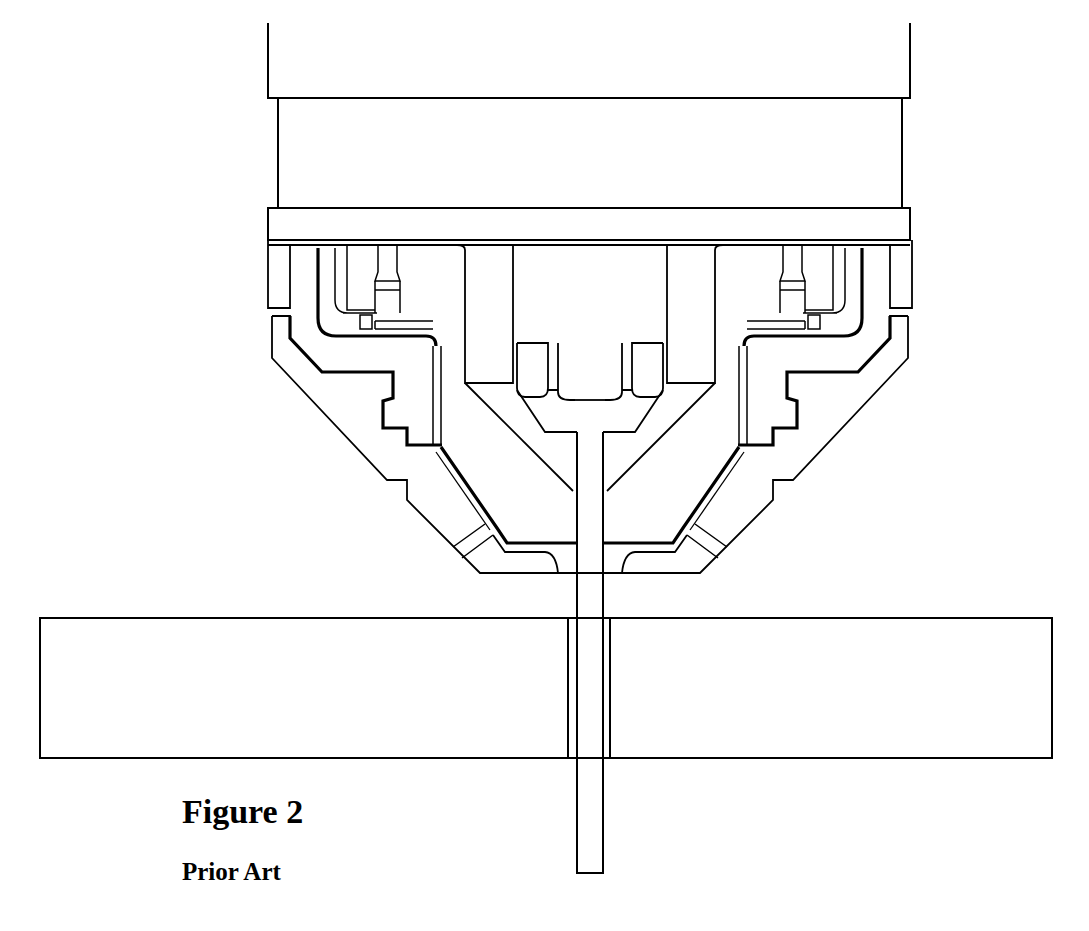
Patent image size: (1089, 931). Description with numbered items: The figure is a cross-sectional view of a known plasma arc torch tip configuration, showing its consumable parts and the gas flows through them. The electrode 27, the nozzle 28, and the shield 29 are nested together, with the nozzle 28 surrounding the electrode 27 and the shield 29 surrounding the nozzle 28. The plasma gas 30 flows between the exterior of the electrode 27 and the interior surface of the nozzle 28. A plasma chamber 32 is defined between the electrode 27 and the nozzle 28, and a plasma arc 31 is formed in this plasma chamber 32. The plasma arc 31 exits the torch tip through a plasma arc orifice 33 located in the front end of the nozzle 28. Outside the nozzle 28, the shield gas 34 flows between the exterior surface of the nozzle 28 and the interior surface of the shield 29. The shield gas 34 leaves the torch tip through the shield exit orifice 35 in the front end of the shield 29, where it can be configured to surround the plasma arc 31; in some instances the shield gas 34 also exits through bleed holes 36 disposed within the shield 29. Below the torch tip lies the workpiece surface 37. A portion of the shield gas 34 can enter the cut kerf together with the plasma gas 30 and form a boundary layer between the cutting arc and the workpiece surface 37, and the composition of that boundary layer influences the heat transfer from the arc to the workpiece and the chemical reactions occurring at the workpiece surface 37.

The electrode 27 is at (593, 302).
The nozzle 28 is at (697, 455).
The shield 29 is at (738, 508).
The plasma gas 30 is at (487, 362).
The plasma arc 31 is at (598, 600).
The plasma chamber 32 is at (556, 457).
The plasma arc orifice 33 is at (612, 503).
The shield gas 34 is at (443, 458).
The shield exit orifice 35 is at (558, 568).
The bleed holes 36 is at (458, 545).
The workpiece surface 37 is at (838, 613).